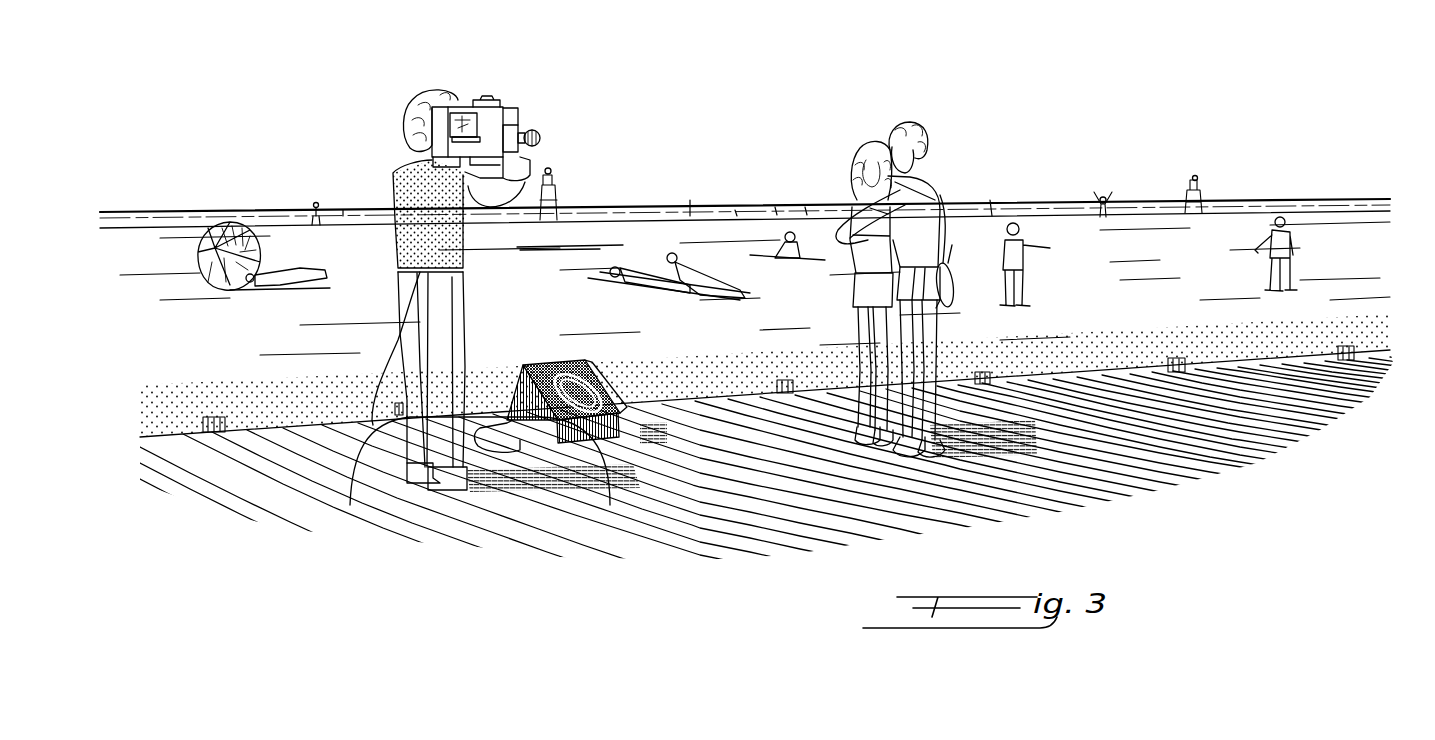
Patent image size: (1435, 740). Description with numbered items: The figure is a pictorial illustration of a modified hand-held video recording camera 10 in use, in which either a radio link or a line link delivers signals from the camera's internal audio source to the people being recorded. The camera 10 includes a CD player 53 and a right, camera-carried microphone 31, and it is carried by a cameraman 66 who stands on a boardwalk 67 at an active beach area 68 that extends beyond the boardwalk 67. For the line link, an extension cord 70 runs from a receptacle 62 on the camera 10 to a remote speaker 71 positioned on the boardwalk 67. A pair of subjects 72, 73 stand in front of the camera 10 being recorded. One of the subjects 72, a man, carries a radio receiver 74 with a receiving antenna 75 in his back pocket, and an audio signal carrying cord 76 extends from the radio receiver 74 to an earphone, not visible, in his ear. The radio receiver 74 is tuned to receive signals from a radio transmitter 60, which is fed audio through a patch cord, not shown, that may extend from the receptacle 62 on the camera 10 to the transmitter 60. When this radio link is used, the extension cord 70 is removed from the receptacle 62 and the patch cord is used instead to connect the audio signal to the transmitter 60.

The hand-held video recording camera 10 is at (524, 106).
The right camera-carried microphone 31 is at (502, 100).
The CD player 53 is at (459, 107).
The radio transmitter 60 is at (507, 150).
The receptacle 62 is at (487, 148).
The cameraman 66 is at (392, 168).
The boardwalk 67 is at (1160, 447).
The active beach area 68 is at (1255, 166).
The extension cord 70 is at (350, 505).
The remote speaker 71 is at (607, 450).
The subject 72 is at (908, 122).
The subject 73 is at (863, 143).
The radio receiver 74 is at (957, 273).
The receiving antenna 75 is at (953, 257).
The audio signal carrying cord 76 is at (953, 287).